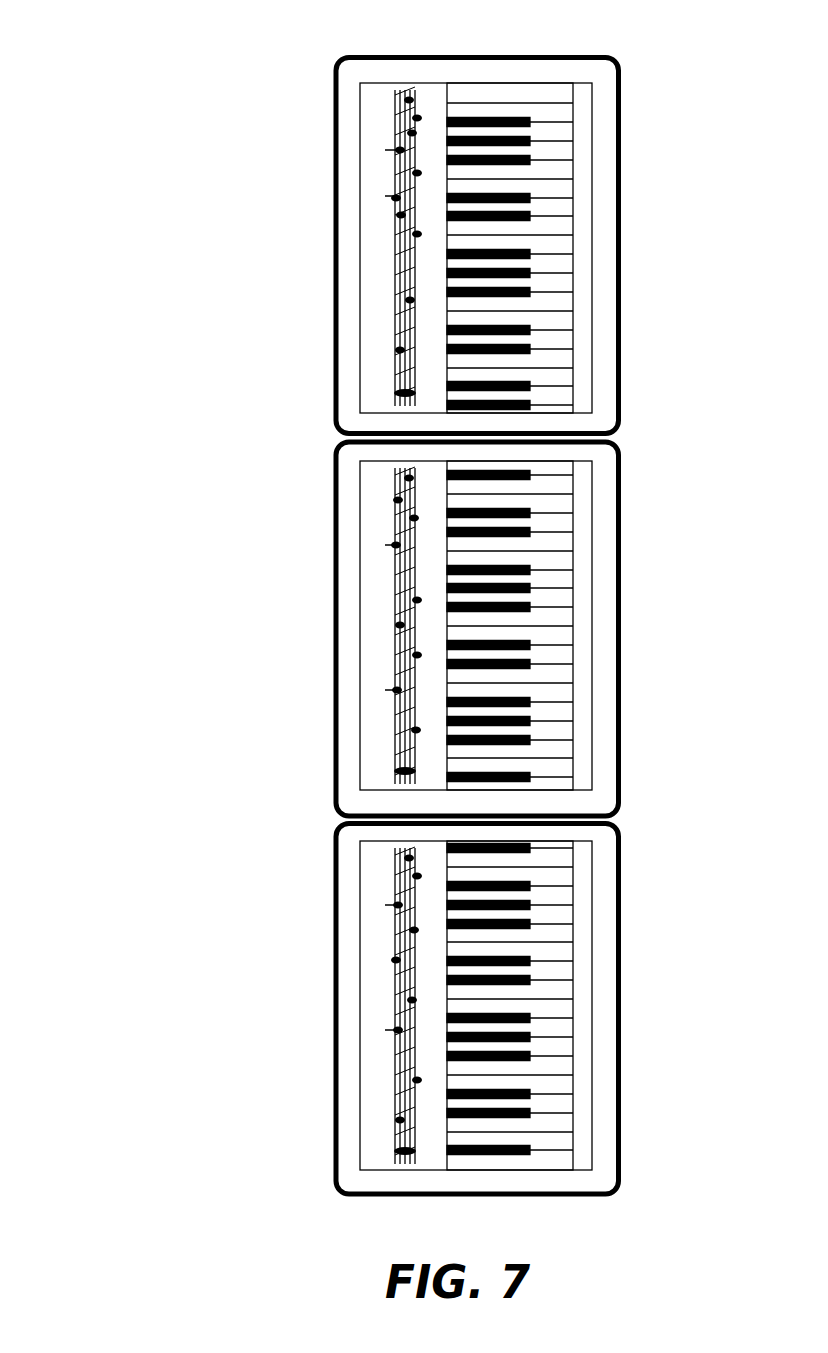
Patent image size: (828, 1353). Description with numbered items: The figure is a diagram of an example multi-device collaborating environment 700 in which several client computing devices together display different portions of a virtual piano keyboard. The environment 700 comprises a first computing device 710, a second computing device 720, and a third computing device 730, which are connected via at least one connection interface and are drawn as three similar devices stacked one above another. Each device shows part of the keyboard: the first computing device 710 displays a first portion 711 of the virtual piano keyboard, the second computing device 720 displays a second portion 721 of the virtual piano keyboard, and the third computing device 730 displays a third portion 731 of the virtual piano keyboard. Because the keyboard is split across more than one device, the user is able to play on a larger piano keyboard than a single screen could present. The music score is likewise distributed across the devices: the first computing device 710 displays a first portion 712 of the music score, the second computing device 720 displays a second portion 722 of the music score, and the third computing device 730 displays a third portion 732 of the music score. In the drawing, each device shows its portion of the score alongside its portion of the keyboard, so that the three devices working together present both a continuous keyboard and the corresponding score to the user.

The multi-device collaborating environment 700 is at (160, 40).
The first computing device 710 is at (452, 217).
The first portion of the virtual piano keyboard 711 is at (547, 122).
The first portion of the music score 712 is at (386, 188).
The second computing device 720 is at (452, 618).
The second portion of the virtual piano keyboard 721 is at (532, 545).
The second portion of the music score 722 is at (390, 563).
The third computing device 730 is at (461, 1007).
The third portion of the virtual piano keyboard 731 is at (532, 945).
The third portion of the music score 732 is at (392, 980).